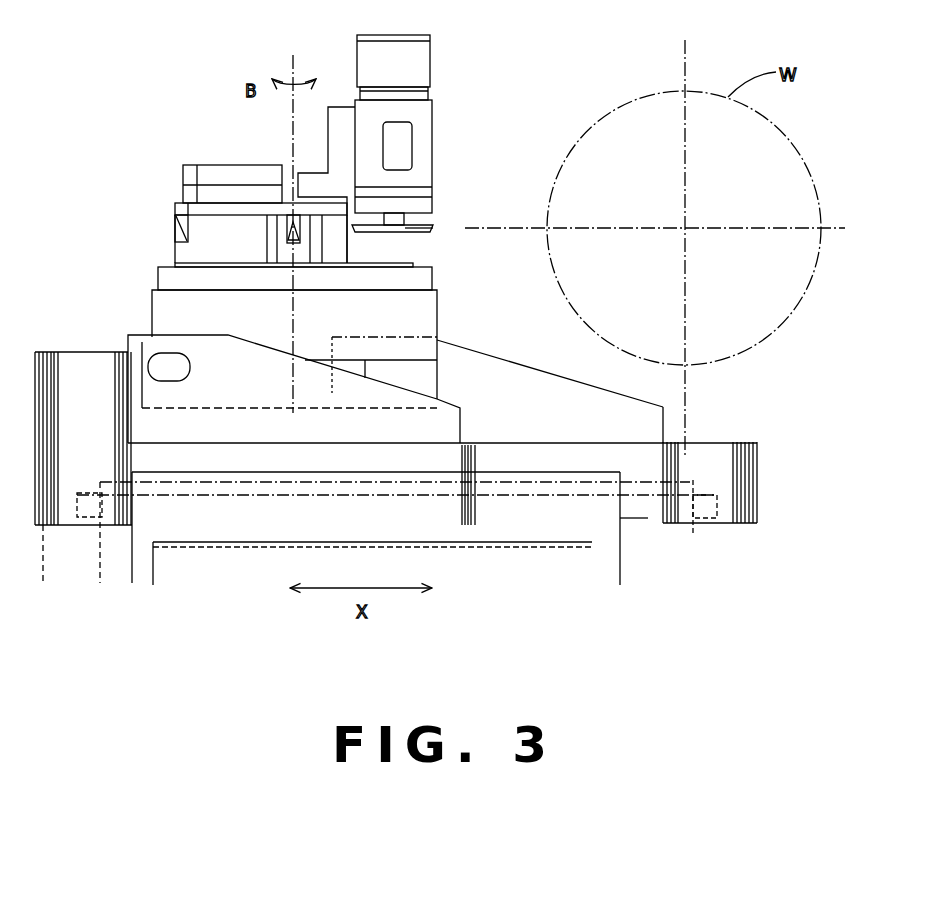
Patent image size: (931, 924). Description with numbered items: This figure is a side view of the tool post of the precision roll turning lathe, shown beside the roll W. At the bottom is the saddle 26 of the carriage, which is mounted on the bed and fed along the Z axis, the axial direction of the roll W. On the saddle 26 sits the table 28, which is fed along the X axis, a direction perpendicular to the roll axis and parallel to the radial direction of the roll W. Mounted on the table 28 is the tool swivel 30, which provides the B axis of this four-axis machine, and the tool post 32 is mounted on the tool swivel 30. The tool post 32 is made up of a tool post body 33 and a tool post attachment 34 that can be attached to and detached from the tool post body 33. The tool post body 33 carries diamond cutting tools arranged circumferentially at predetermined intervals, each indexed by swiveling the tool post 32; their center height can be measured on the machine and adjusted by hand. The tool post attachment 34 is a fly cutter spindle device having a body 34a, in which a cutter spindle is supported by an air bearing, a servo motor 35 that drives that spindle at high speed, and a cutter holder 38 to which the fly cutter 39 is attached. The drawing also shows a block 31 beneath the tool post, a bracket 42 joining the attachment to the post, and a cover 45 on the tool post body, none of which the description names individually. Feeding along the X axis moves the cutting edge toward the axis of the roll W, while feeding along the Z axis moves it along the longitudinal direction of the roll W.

The saddle 26 is at (600, 576).
The table 28 is at (235, 457).
The tool swivel 30 is at (445, 322).
The base block 31 is at (413, 305).
The tool post 32 is at (200, 255).
The tool post body 33 is at (235, 230).
The tool post attachment 34 is at (440, 117).
The body 34a is at (418, 142).
The servo motor 35 is at (418, 63).
The cutter holder 38 is at (400, 233).
The fly cutter 39 is at (430, 227).
The bracket 42 is at (343, 115).
The cover 45 is at (210, 172).